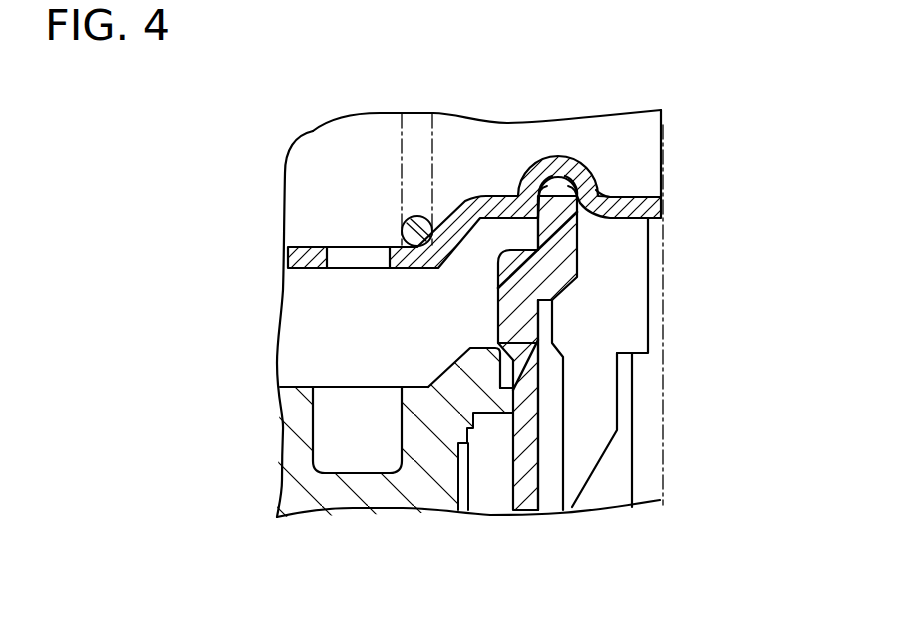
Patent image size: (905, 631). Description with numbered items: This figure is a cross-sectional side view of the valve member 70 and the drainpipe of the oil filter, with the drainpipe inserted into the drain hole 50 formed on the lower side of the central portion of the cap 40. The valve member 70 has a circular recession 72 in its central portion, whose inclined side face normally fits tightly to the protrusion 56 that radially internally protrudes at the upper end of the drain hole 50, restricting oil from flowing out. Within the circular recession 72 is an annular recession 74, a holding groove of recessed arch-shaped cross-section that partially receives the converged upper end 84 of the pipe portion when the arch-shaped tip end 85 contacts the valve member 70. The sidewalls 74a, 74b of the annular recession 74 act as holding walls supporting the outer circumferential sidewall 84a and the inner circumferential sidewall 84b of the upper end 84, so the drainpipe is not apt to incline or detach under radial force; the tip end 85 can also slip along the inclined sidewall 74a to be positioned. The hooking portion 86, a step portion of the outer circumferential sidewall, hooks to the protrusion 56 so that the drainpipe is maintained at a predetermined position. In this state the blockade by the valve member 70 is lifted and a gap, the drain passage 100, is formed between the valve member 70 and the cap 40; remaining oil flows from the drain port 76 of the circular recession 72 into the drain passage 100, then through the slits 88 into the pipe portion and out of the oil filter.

The valve member 70 is at (367, 193).
The circular recession 72 is at (470, 198).
The annular recession 74 is at (557, 141).
The sidewall 74a is at (552, 183).
The sidewall 74b is at (585, 176).
The drain port 76 is at (347, 253).
The tip end 85 is at (597, 190).
The upper end 84 is at (590, 233).
The outer circumferential sidewall 84a is at (537, 232).
The inner circumferential sidewall 84b is at (578, 260).
The hooking portion 86 is at (505, 337).
The slits 88 is at (616, 422).
The cap 40 is at (425, 485).
The drain hole 50 is at (537, 420).
The protrusion 56 is at (465, 373).
The drain passage 100 is at (338, 334).